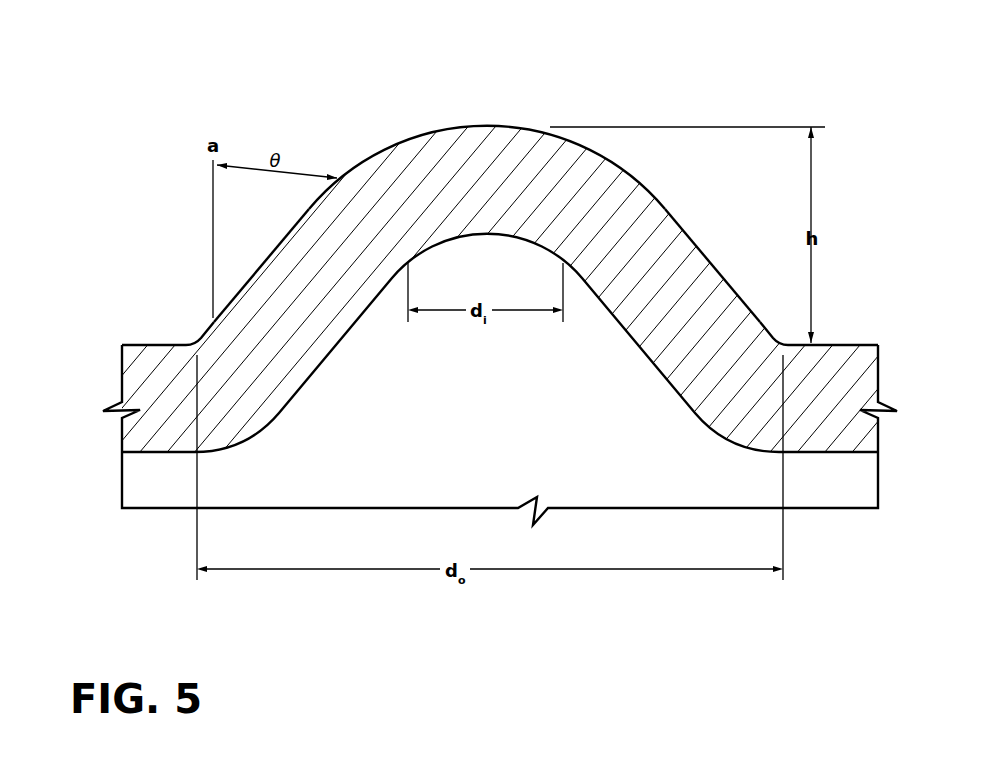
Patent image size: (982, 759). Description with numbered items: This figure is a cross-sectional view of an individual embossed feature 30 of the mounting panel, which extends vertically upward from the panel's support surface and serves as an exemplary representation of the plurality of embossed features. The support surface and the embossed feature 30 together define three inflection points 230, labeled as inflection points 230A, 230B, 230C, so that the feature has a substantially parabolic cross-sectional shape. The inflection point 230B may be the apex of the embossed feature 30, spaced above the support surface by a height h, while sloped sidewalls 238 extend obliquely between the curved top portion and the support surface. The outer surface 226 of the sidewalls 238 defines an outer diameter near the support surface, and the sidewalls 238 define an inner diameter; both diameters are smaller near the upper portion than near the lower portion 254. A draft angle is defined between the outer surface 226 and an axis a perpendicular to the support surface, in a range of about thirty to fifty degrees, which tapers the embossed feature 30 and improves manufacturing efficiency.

The individual embossed feature 30 is at (720, 395).
The inflection points 230 is at (491, 300).
The inflection point 230A is at (190, 345).
The inflection point 230B is at (487, 126).
The inflection point 230C is at (780, 343).
The outer surface 226 is at (667, 210).
The sloped sidewalls 238 is at (264, 262).
The lower portion 254 is at (247, 323).